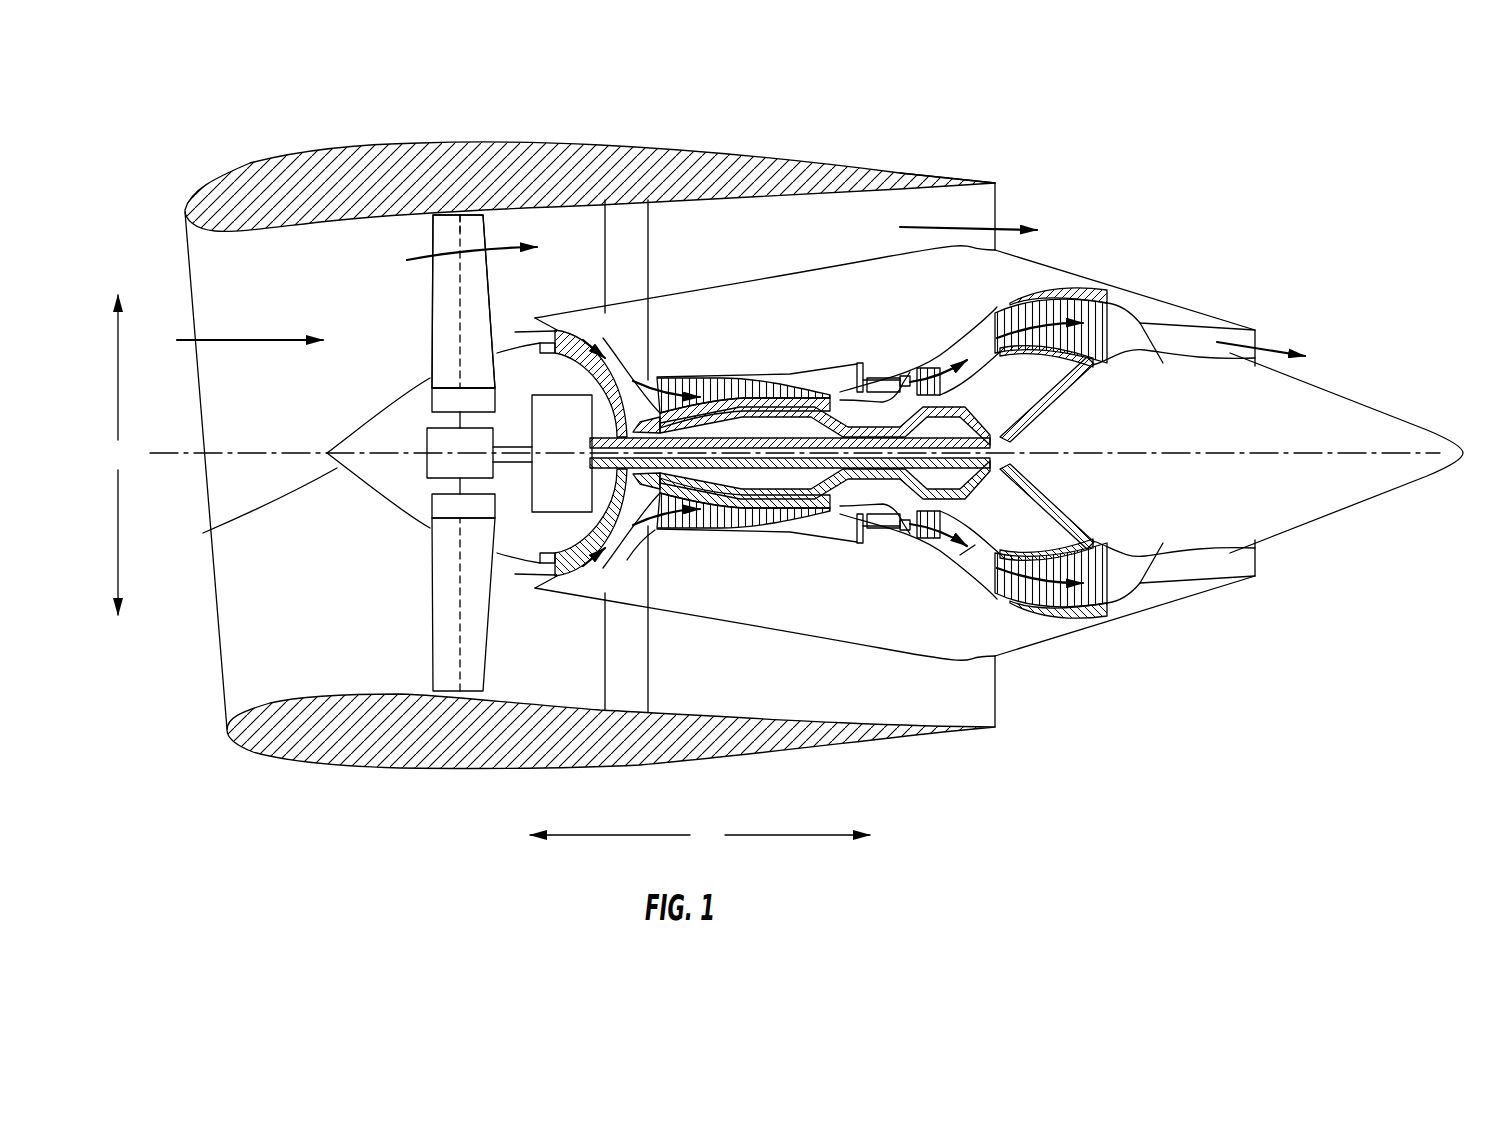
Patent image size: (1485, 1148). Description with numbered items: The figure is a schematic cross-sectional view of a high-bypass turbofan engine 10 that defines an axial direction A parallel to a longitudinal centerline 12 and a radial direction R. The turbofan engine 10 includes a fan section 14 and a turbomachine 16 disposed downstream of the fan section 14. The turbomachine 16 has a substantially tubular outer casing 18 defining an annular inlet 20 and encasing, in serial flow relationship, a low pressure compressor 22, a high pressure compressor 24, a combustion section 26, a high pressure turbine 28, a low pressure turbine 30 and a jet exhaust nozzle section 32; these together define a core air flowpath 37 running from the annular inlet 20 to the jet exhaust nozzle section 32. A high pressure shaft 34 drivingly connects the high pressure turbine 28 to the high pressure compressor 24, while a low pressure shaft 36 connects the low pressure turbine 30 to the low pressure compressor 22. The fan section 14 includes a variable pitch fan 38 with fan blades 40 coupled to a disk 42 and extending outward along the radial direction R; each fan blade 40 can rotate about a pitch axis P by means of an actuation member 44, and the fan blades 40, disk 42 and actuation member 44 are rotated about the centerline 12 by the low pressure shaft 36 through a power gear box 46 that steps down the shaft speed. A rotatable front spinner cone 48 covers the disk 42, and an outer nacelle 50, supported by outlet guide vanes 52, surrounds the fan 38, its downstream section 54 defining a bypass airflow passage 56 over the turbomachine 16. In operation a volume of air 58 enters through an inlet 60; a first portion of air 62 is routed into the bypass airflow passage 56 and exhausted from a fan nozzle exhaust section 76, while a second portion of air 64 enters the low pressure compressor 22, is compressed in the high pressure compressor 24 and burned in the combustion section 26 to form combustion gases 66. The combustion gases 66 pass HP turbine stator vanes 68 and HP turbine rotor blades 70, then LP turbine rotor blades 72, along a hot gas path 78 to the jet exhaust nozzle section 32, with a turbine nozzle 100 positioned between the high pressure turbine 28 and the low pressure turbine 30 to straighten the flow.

The turbofan engine 10 is at (787, 449).
The longitudinal centerline 12 is at (1362, 453).
The fan section 14 is at (482, 100).
The turbomachine 16 is at (840, 330).
The outer casing 18 is at (797, 638).
The annular inlet 20 is at (518, 585).
The low pressure compressor 22 is at (590, 520).
The high pressure compressor 24 is at (680, 513).
The combustion section 26 is at (877, 530).
The high pressure turbine 28 is at (970, 543).
The low pressure turbine 30 is at (1090, 597).
The jet exhaust nozzle section 32 is at (1160, 580).
The high pressure shaft 34 is at (883, 420).
The low pressure shaft 36 is at (1033, 437).
The core air flowpath 37 is at (633, 520).
The variable pitch fan 38 is at (390, 518).
The fan blades 40 is at (427, 627).
The disk 42 is at (450, 402).
The actuation member 44 is at (427, 430).
The power gear box 46 is at (573, 415).
The front spinner cone 48 is at (213, 533).
The outer nacelle 50 is at (483, 768).
The outlet guide vanes 52 is at (648, 237).
The downstream section of the nacelle 54 is at (930, 170).
The bypass airflow passage 56 is at (764, 249).
The volume of air 58 is at (247, 338).
The inlet 60 is at (223, 698).
The first portion of air 62 is at (443, 283).
The second portion of air 64 is at (525, 332).
The combustion gases 66 is at (930, 362).
The HP turbine stator vanes 68 is at (900, 533).
The HP turbine rotor blades 70 is at (917, 527).
The LP turbine rotor blades 72 is at (997, 587).
The fan nozzle exhaust section 76 is at (983, 212).
The hot gas path 78 is at (980, 338).
The turbine nozzle 100 is at (970, 557).
The pitch axis P is at (463, 235).
The radial direction R is at (118, 455).
The axial direction A is at (700, 834).